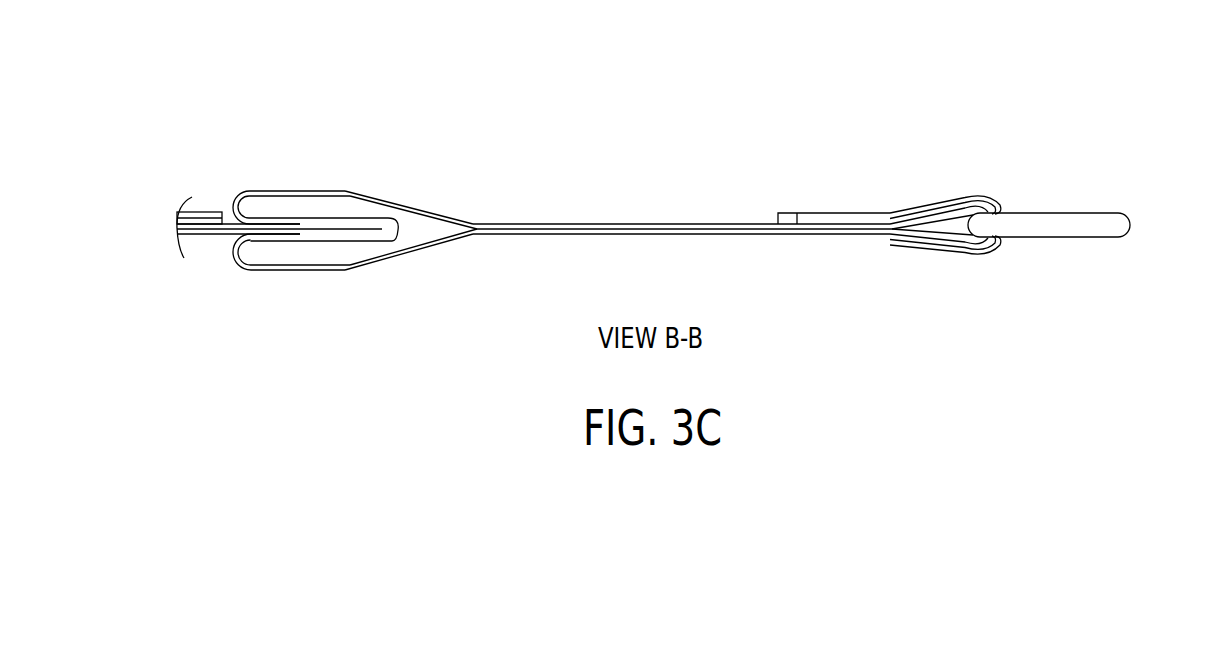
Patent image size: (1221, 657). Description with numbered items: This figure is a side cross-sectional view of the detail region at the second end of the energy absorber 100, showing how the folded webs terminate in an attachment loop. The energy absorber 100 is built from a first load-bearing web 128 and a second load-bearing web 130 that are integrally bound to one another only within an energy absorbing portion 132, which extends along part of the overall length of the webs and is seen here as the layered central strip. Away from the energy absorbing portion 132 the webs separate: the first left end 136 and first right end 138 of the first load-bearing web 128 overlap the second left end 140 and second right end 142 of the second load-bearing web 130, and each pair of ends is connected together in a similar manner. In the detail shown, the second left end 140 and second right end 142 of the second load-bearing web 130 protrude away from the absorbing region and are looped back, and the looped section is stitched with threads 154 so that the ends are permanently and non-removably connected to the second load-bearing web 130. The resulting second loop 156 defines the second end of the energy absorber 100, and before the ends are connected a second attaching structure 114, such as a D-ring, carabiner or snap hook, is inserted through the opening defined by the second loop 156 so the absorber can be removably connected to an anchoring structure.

The energy absorber 100 is at (1055, 92).
The second attaching structure 114 is at (1145, 221).
The first load-bearing web 128 is at (199, 188).
The second load-bearing web 130 is at (525, 237).
The energy absorbing portion 132 is at (350, 219).
The first left end 136 is at (217, 236).
The first right end 138 is at (293, 190).
The second left end 140 is at (208, 300).
The second right end 142 is at (673, 150).
The threads 154 is at (856, 213).
The second loop 156 is at (964, 196).